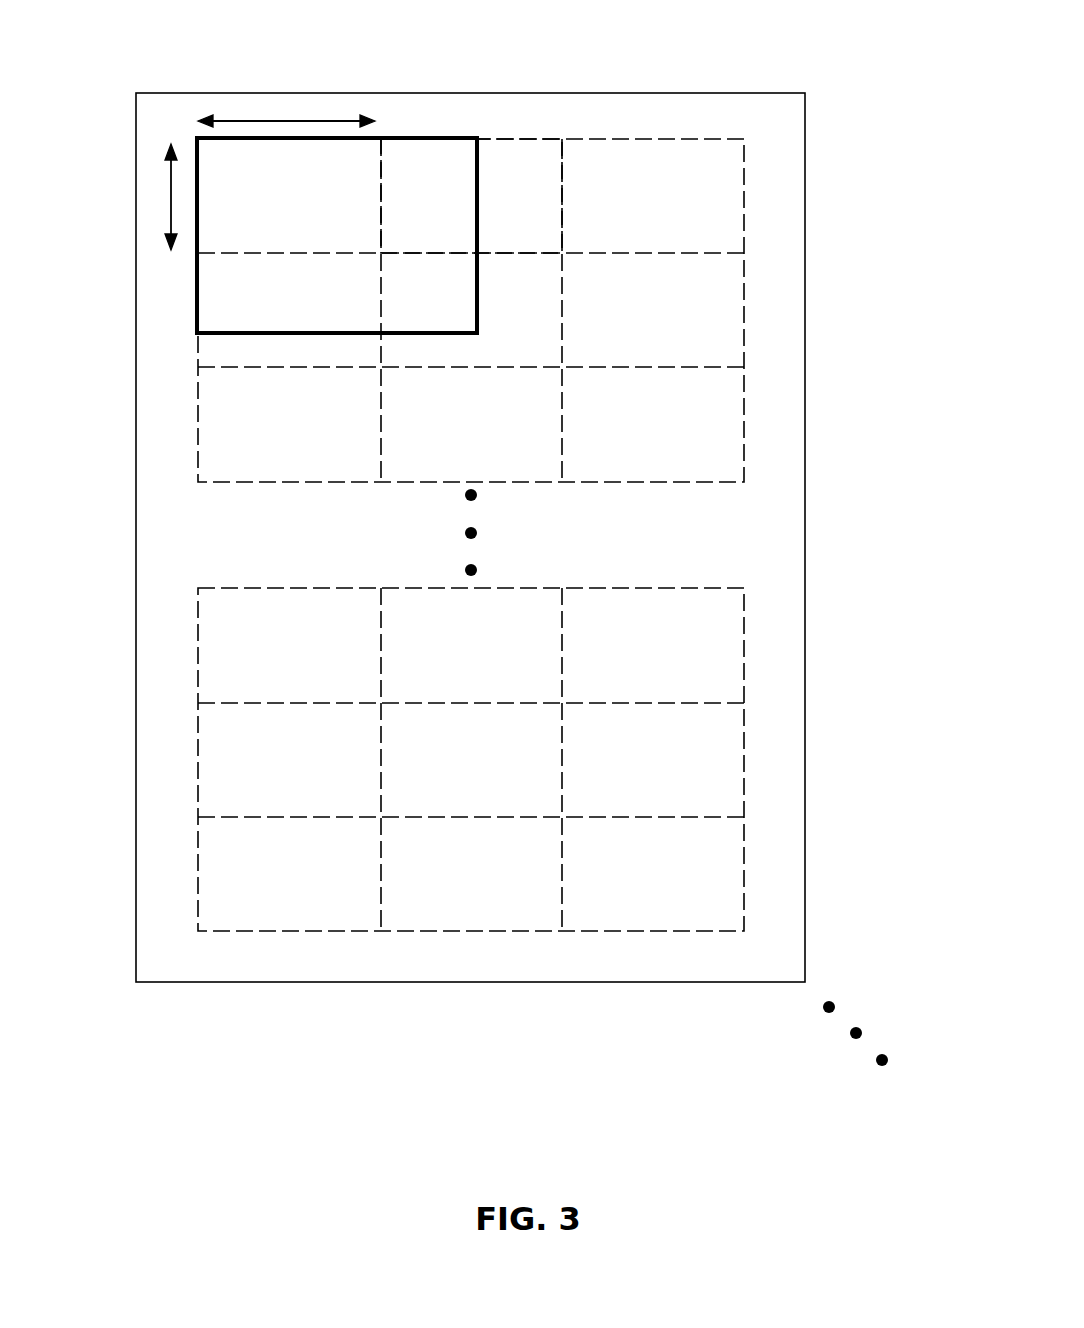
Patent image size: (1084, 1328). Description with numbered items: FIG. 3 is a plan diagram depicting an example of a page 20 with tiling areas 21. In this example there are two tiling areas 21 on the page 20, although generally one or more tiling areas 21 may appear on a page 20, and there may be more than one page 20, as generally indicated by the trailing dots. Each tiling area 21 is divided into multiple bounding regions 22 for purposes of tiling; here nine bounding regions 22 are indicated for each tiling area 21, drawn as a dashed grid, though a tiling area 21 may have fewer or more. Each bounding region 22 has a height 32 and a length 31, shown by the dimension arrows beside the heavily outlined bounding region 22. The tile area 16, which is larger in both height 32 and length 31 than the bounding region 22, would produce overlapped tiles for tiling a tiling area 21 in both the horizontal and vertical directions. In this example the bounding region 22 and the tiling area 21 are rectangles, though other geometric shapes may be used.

The page 20 is at (227, 983).
The tiling area 21 is at (745, 324).
The tile area 16 is at (478, 152).
The bounding region 22 is at (337, 412).
The length 31 is at (273, 120).
The height 32 is at (168, 193).